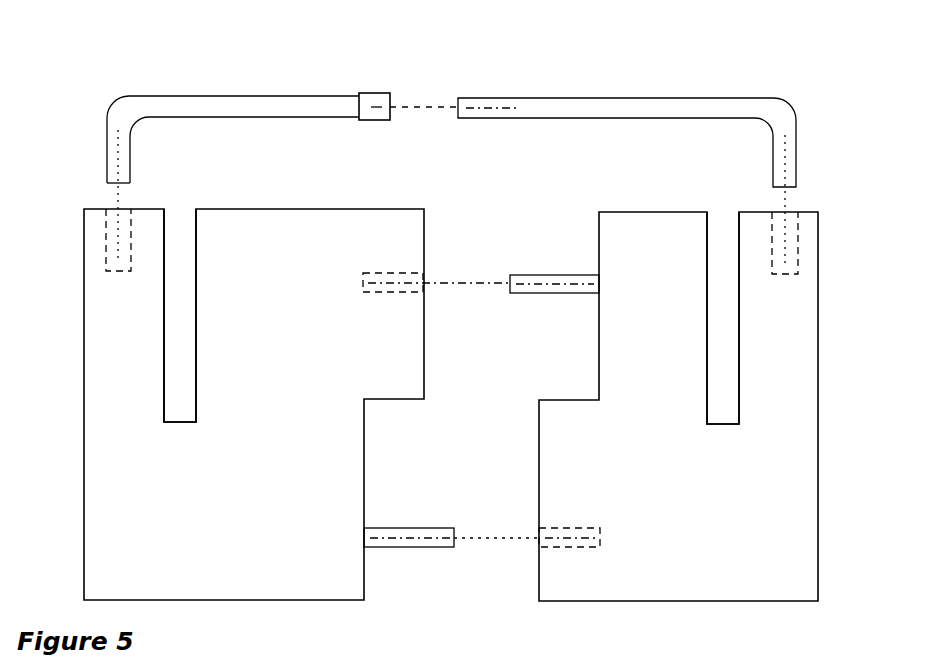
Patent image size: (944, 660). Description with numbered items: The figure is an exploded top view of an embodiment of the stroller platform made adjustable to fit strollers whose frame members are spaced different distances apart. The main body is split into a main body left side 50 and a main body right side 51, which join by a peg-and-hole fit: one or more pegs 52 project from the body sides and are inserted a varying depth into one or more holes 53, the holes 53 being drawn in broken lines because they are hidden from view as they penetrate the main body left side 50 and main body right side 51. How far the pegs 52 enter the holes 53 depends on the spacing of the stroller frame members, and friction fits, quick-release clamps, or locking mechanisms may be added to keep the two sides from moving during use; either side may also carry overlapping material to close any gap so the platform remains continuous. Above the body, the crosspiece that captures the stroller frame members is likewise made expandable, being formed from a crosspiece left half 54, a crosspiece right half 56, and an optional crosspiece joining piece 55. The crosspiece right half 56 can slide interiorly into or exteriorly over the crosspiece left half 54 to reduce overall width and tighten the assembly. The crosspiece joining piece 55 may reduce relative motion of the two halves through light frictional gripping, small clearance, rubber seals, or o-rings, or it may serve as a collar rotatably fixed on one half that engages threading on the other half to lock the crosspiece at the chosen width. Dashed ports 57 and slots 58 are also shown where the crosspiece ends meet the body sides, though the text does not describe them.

The main body left side 50 is at (135, 478).
The main body right side 51 is at (692, 477).
The peg 52 is at (430, 532).
The hole 53 is at (405, 279).
The crosspiece left half 54 is at (270, 104).
The crosspiece joining piece 55 is at (377, 102).
The crosspiece right half 56 is at (560, 105).
The conduit receiving port 57 is at (112, 240).
The slot 58 is at (175, 245).